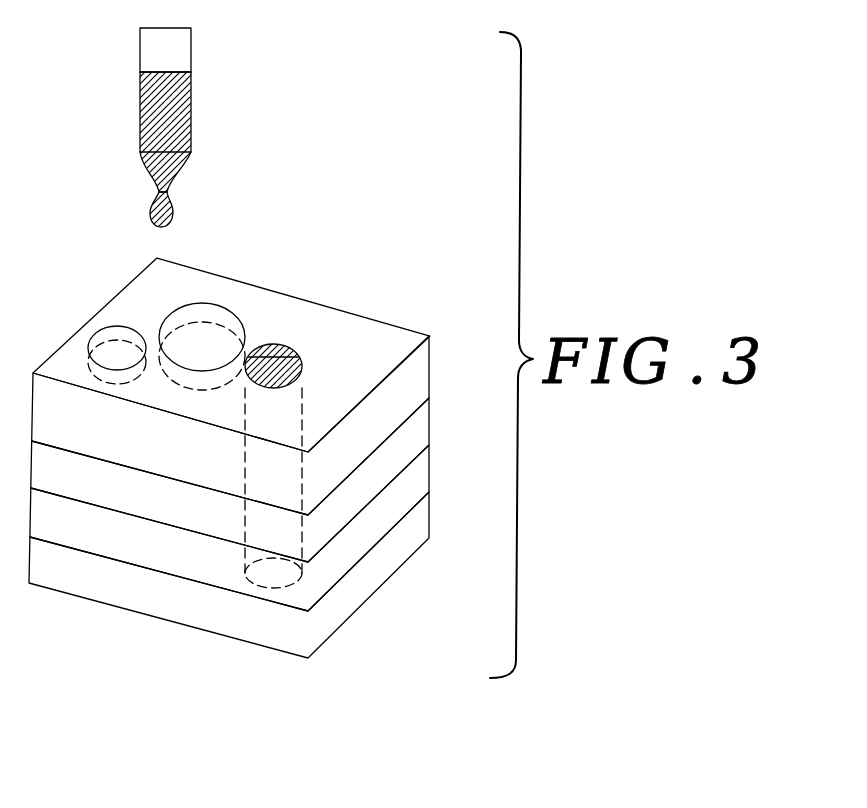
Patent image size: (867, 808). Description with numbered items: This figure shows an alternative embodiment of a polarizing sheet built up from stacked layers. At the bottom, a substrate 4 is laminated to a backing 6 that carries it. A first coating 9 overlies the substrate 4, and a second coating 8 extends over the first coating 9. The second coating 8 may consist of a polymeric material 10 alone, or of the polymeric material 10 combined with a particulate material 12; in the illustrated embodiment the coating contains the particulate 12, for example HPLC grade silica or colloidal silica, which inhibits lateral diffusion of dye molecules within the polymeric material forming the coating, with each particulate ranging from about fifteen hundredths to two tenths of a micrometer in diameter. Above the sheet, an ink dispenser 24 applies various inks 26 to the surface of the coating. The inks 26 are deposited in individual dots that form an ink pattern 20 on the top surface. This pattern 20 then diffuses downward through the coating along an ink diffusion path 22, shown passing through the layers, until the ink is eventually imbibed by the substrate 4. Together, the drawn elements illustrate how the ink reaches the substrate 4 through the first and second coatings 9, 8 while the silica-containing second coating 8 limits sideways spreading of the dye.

The substrate 4 is at (415, 480).
The backing 6 is at (415, 522).
The second coating 8 is at (429, 387).
The first coating 9 is at (415, 433).
The polymeric material 10 is at (407, 378).
The particulate material 12 is at (110, 327).
The ink pattern 20 is at (287, 347).
The ink diffusion path 22 is at (302, 413).
The ink dispenser 24 is at (140, 52).
The inks 26 is at (160, 118).